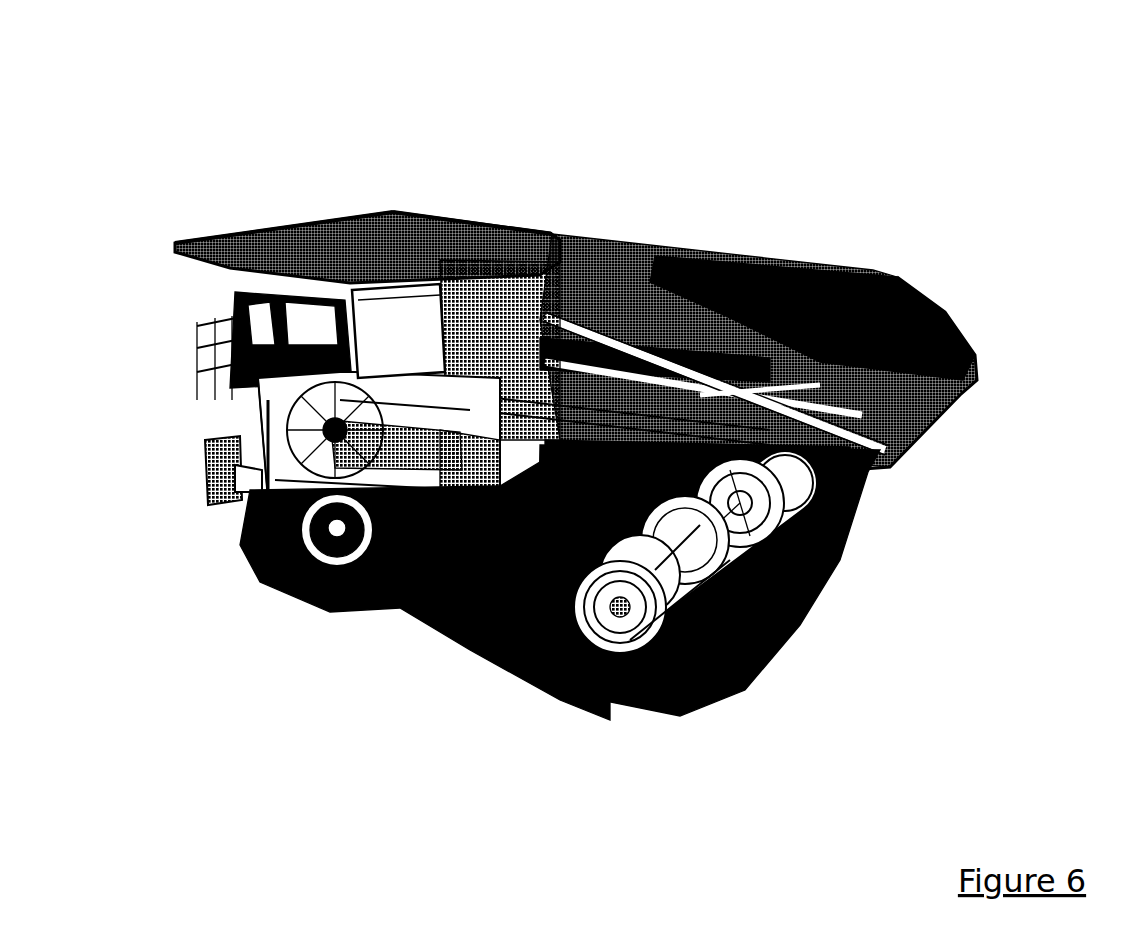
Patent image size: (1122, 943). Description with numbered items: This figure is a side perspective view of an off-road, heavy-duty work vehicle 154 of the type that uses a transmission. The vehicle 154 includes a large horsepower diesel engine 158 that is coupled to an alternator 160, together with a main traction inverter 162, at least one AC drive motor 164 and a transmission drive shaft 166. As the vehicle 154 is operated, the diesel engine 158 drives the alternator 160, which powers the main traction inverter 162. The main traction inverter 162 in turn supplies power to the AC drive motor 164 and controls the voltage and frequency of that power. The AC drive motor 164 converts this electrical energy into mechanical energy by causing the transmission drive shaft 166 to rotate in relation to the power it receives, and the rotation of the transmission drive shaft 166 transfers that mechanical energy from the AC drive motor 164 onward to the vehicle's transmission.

The off-road, heavy-duty work vehicle 154 is at (521, 421).
The diesel engine 158 is at (205, 422).
The alternator 160 is at (482, 630).
The main traction inverter 162 is at (413, 290).
The AC drive motor 164 is at (838, 562).
The transmission drive shaft 166 is at (778, 665).